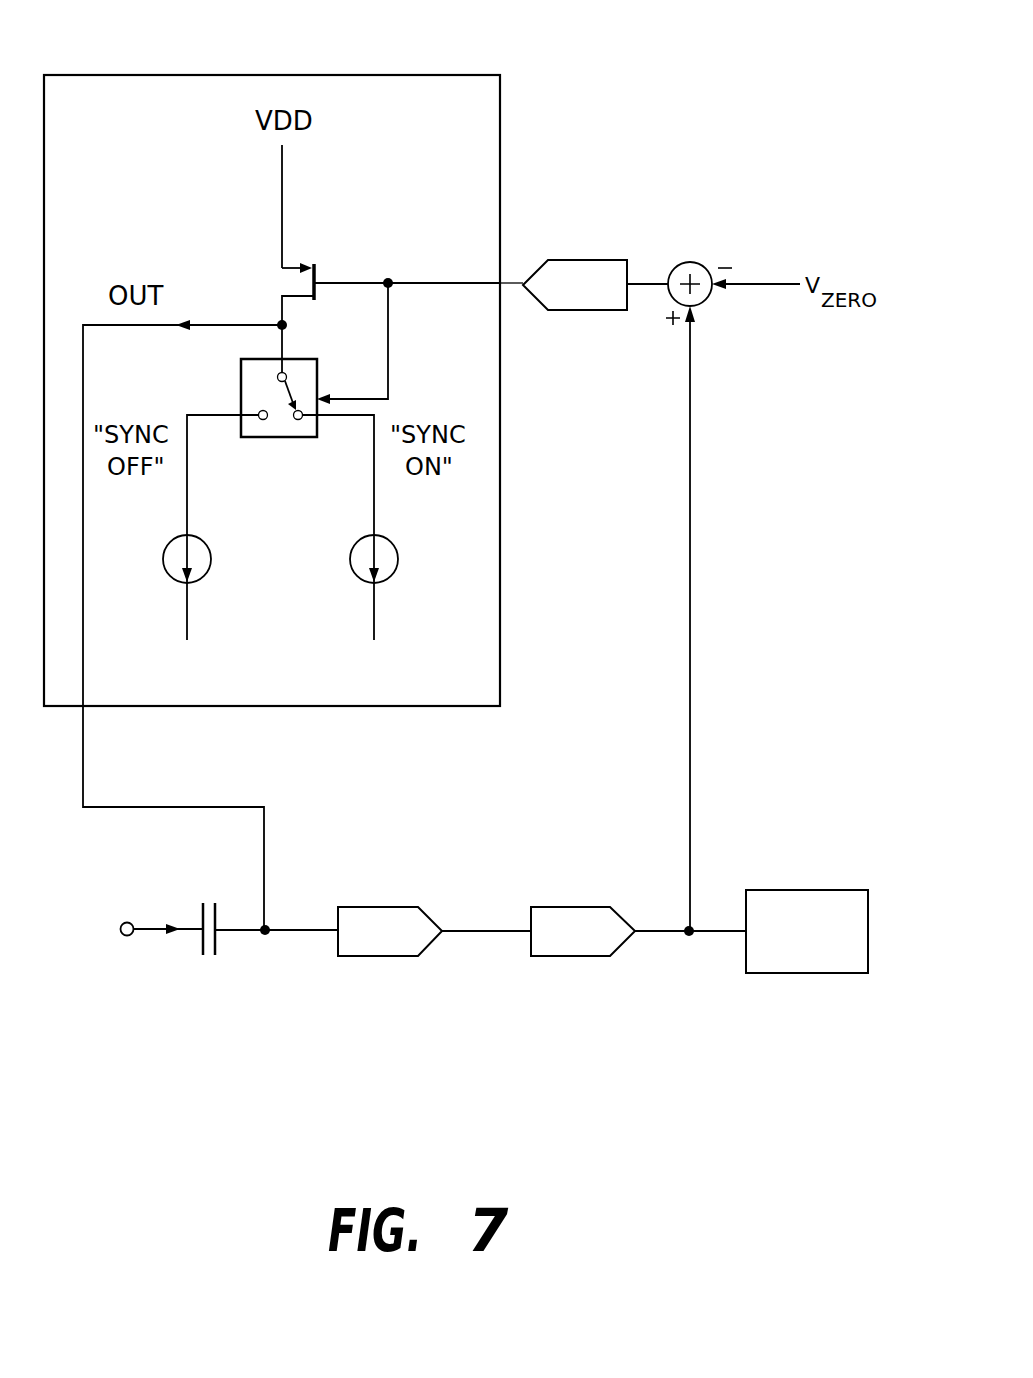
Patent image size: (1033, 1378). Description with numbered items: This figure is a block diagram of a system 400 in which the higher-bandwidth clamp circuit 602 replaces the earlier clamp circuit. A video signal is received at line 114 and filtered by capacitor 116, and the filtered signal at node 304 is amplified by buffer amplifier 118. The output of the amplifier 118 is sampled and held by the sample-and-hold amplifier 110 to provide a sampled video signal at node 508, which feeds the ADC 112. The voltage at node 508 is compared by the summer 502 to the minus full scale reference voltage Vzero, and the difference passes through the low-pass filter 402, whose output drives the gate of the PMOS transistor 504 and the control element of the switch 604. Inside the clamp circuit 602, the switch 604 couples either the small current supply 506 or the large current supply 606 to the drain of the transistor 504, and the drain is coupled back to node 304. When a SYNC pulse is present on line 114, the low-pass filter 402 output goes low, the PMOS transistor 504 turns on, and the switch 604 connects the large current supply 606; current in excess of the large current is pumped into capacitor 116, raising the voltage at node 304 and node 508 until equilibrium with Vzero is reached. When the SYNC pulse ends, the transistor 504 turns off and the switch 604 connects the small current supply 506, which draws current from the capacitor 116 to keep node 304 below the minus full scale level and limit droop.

The clamp circuit 602 is at (399, 75).
The system 400 is at (606, 153).
The PMOS transistor 504 is at (318, 268).
The switch 604 is at (260, 438).
The small current supply 506 is at (163, 560).
The large current supply 606 is at (378, 585).
The low-pass filter 402 is at (562, 311).
The summer 502 is at (687, 263).
The line 114 is at (127, 921).
The capacitor 116 is at (212, 957).
The node 304 is at (265, 935).
The buffer amplifier 118 is at (383, 957).
The sample-and-hold amplifier 110 is at (600, 957).
The node 508 is at (685, 929).
The ADC 112 is at (779, 888).